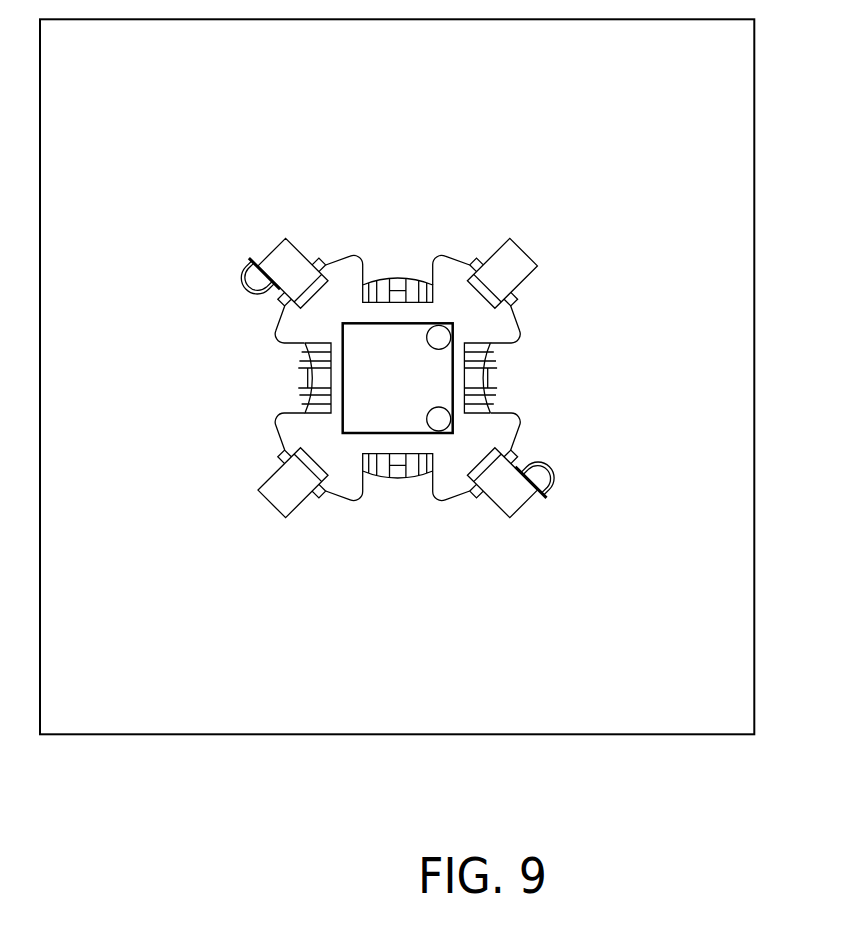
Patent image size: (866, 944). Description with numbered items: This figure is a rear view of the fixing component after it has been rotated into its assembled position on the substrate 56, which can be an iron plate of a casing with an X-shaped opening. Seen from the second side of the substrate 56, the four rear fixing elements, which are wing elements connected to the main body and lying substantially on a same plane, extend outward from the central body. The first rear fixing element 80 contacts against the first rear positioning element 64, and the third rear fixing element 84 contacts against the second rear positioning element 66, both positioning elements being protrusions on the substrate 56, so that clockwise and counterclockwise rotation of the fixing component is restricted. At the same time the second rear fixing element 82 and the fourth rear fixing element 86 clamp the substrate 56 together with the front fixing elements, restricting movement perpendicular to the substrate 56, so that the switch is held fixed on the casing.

The substrate 56 is at (755, 100).
The first rear positioning element 64 is at (246, 264).
The second rear positioning element 66 is at (553, 472).
The first rear fixing element 80 is at (291, 257).
The second rear fixing element 82 is at (278, 497).
The third rear fixing element 84 is at (517, 497).
The fourth rear fixing element 86 is at (529, 260).